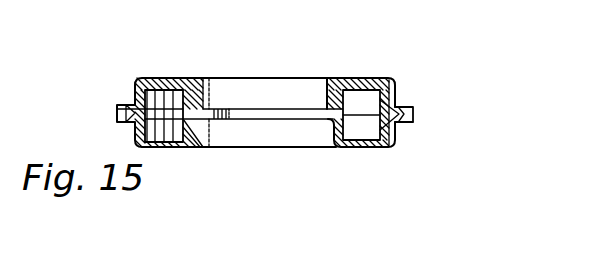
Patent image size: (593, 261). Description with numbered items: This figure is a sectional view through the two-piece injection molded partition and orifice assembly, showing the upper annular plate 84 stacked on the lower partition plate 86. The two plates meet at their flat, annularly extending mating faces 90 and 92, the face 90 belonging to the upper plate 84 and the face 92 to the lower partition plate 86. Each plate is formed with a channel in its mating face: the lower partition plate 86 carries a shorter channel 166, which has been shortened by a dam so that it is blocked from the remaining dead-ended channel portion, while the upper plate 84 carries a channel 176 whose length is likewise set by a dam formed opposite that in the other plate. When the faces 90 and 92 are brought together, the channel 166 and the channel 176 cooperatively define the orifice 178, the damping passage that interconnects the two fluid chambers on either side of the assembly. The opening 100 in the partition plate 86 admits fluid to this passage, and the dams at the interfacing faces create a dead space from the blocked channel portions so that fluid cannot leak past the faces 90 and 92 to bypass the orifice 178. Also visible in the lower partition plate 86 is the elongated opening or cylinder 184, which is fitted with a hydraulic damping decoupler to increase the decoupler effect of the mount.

The shorter channel 166 is at (133, 108).
The channel 176 is at (178, 98).
The opening 100 is at (176, 147).
The elongated opening or cylinder 184 is at (309, 114).
The orifice 178 is at (357, 100).
The upper annular plate 84 is at (398, 94).
The mating face 92 is at (400, 109).
The mating face 90 is at (405, 120).
The lower partition plate 86 is at (390, 148).